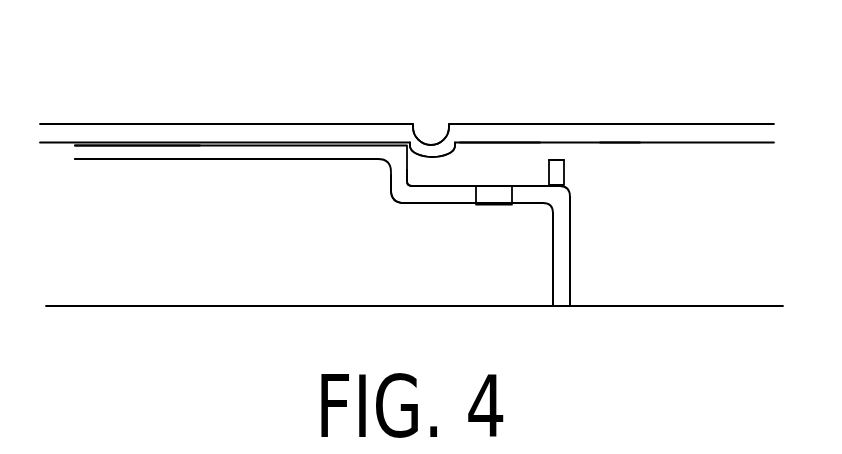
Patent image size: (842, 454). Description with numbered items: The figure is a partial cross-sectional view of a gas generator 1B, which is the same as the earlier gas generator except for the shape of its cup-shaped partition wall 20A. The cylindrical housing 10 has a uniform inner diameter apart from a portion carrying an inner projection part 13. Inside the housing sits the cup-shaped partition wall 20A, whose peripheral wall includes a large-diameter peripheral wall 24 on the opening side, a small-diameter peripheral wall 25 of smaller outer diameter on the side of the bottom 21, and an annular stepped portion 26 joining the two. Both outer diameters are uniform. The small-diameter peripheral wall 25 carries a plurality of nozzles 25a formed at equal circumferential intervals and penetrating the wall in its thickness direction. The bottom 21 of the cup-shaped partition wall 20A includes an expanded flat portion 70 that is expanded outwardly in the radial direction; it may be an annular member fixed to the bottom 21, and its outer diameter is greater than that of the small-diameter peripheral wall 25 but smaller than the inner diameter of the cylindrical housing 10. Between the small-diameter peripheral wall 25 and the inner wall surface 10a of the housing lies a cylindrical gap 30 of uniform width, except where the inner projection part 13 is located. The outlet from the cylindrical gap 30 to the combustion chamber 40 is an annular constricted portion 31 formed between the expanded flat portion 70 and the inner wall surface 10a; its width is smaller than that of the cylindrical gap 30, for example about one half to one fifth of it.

The gas generator 1B is at (258, 105).
The cylindrical housing 10 is at (650, 124).
The inner wall surface of the cylindrical housing 10a is at (600, 147).
The inner projection part 13 is at (438, 164).
The cylindrical gap 30 is at (497, 167).
The annular constricted portion 31 is at (558, 152).
The expanded flat portion 70 is at (555, 173).
The large-diameter peripheral wall 24 is at (318, 159).
The annular stepped portion 26 is at (409, 178).
The small-diameter peripheral wall 25 is at (452, 205).
The nozzle 25a is at (494, 207).
The bottom 21 is at (571, 272).
The cup-shaped partition wall 20A is at (582, 237).
The combustion chamber 40 is at (735, 268).